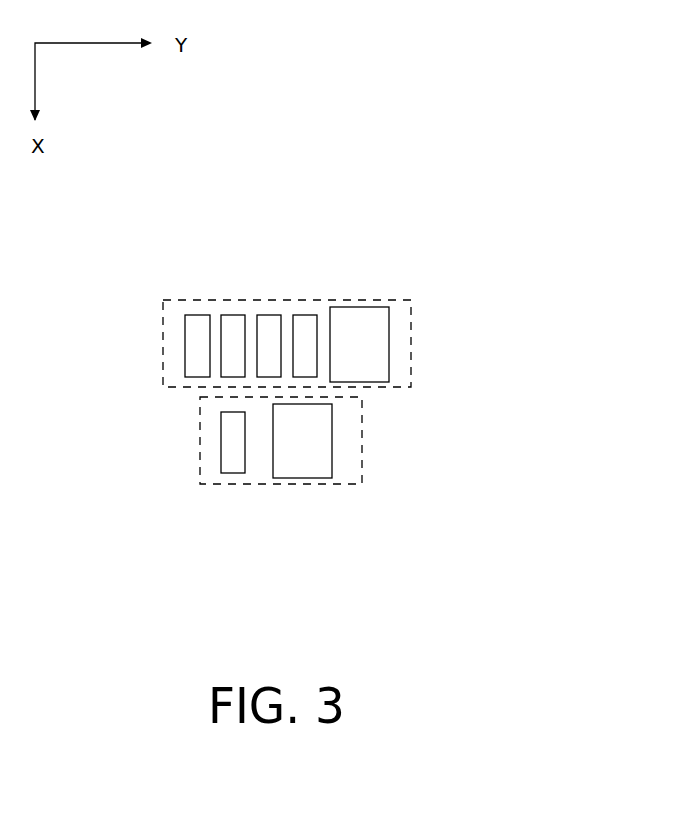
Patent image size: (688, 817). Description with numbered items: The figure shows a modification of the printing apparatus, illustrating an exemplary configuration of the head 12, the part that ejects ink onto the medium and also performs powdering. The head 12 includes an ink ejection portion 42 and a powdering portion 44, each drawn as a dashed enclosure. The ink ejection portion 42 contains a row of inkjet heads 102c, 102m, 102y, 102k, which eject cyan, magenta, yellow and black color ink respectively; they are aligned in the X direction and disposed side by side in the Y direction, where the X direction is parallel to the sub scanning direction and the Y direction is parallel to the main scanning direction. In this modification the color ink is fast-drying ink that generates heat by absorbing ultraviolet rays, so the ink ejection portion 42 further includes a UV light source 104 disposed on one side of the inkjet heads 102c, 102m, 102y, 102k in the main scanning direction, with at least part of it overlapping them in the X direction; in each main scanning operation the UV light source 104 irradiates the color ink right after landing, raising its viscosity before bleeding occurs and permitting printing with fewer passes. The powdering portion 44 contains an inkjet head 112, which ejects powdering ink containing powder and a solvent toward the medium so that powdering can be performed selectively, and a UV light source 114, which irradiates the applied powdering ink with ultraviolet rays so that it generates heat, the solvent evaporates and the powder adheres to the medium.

The head 12 is at (500, 87).
The ink ejection portion 42 is at (163, 347).
The powdering portion 44 is at (200, 453).
The inkjet head 102c is at (197, 315).
The inkjet head 102m is at (233, 315).
The inkjet head 102y is at (272, 315).
The inkjet head 102k is at (316, 315).
The UV light source 104 is at (389, 352).
The inkjet head 112 is at (234, 466).
The UV light source 114 is at (317, 470).